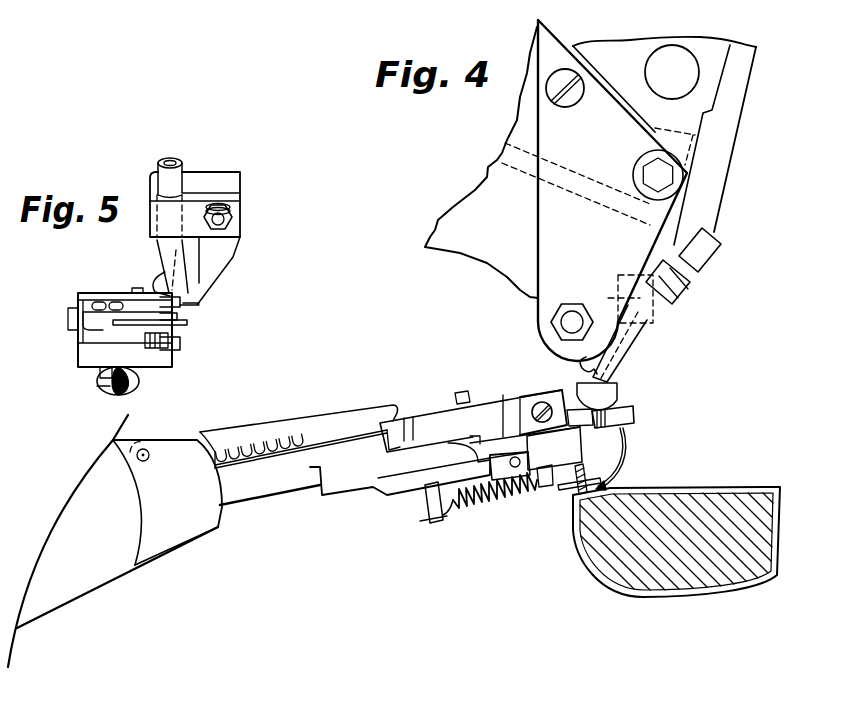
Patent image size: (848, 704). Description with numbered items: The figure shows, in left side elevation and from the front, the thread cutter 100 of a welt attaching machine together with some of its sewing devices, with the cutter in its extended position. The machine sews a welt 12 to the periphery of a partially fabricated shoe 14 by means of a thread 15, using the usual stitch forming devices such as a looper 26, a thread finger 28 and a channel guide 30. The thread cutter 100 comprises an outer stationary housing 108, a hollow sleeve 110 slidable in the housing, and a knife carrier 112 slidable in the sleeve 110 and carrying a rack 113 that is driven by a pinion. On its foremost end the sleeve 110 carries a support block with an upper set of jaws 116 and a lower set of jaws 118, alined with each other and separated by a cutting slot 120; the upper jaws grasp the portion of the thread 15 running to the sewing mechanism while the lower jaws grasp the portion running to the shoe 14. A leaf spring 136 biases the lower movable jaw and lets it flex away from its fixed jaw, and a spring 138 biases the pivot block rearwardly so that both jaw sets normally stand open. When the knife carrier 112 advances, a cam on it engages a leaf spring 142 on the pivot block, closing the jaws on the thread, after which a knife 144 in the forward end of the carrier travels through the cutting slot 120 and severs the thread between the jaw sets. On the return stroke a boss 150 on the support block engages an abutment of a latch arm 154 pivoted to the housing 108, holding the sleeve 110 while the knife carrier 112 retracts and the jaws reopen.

In FIG. 4, the welt 12 is at (560, 490).
In FIG. 4, the partially fabricated shoe 14 is at (713, 493).
In FIG. 4, the thread 15 is at (620, 446).
In FIG. 5, the thread 15 is at (200, 303).
In FIG. 4, the looper 26 is at (714, 246).
In FIG. 5, the looper 26 is at (160, 247).
In FIG. 4, the thread finger 28 is at (582, 364).
In FIG. 5, the thread finger 28 is at (160, 278).
In FIG. 4, the channel guide 30 is at (640, 336).
In FIG. 5, the channel guide 30 is at (233, 258).
In FIG. 4, the thread cutter 100 is at (424, 395).
In FIG. 4, the outer stationary housing 108 is at (97, 578).
In FIG. 4, the hollow sleeve 110 is at (270, 490).
In FIG. 4, the knife carrier 112 is at (327, 432).
In FIG. 4, the rack 113 is at (262, 445).
In FIG. 5, the upper set of jaws 116 is at (180, 316).
In FIG. 5, the lower set of jaws 118 is at (180, 338).
In FIG. 5, the cutting slot 120 is at (110, 326).
In FIG. 4, the leaf spring 136 is at (635, 416).
In FIG. 4, the spring 138 is at (486, 512).
In FIG. 5, the spring 138 is at (140, 379).
In FIG. 4, the leaf spring 142 is at (447, 402).
In FIG. 5, the knife 144 is at (188, 325).
In FIG. 4, the boss 150 is at (462, 393).
In FIG. 4, the latch arm 154 is at (362, 412).